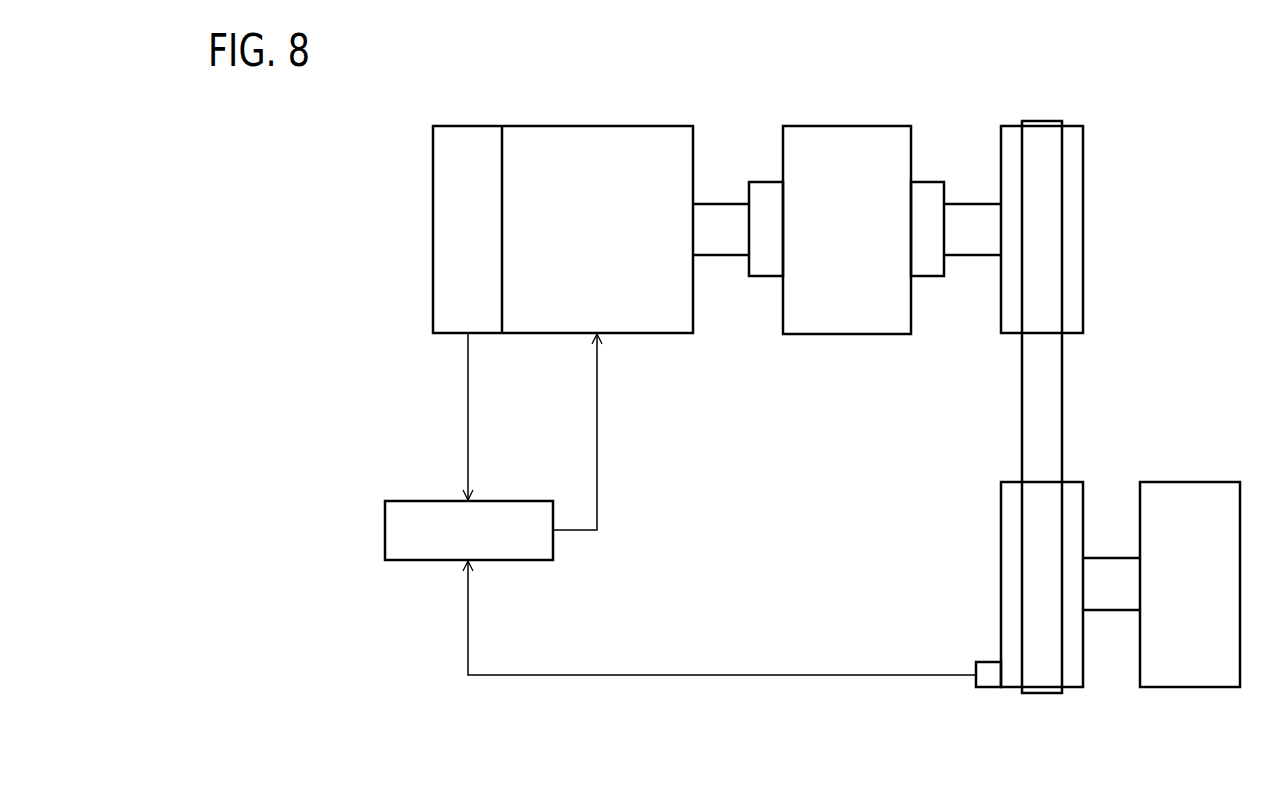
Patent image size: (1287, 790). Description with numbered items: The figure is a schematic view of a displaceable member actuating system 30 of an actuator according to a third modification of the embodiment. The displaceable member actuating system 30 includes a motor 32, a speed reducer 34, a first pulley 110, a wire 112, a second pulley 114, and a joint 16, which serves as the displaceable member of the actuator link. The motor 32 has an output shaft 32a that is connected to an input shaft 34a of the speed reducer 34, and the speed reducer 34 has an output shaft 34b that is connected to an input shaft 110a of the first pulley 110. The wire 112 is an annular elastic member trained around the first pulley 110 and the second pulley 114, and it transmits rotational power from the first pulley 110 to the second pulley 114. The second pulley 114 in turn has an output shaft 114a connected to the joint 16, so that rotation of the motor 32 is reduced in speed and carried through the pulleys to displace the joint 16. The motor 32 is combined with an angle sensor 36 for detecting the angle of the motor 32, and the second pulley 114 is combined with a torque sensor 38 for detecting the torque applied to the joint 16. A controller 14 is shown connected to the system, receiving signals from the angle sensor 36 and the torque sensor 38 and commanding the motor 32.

The displaceable member actuating system 30 is at (715, 58).
The motor 32 is at (578, 130).
The angle sensor 36 is at (468, 128).
The output shaft 32a is at (722, 215).
The speed reducer 34 is at (846, 131).
The input shaft 34a is at (758, 265).
The output shaft 34b is at (937, 190).
The first pulley 110 is at (1075, 130).
The input shaft 110a is at (982, 243).
The wire 112 is at (1050, 388).
The second pulley 114 is at (1010, 596).
The output shaft 114a is at (1113, 573).
The joint 16 is at (1186, 490).
The torque sensor 38 is at (989, 690).
The controller 14 is at (400, 563).